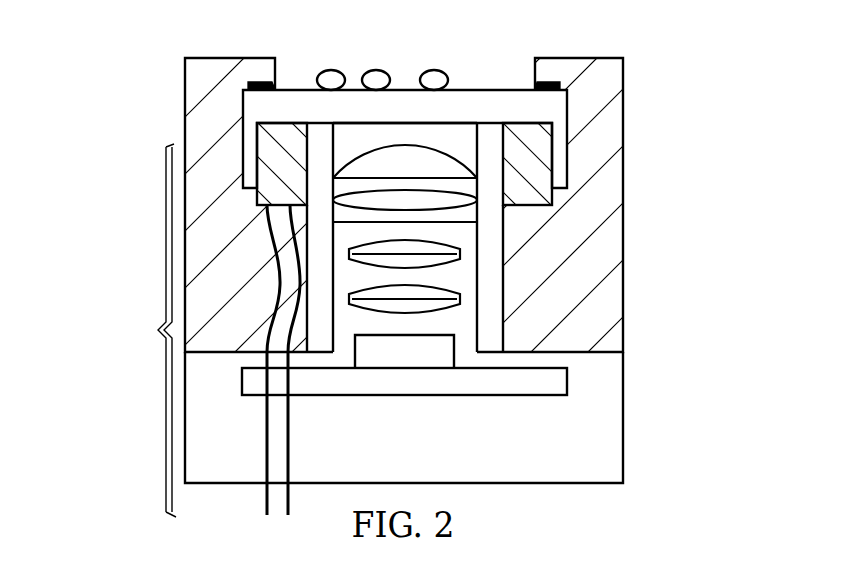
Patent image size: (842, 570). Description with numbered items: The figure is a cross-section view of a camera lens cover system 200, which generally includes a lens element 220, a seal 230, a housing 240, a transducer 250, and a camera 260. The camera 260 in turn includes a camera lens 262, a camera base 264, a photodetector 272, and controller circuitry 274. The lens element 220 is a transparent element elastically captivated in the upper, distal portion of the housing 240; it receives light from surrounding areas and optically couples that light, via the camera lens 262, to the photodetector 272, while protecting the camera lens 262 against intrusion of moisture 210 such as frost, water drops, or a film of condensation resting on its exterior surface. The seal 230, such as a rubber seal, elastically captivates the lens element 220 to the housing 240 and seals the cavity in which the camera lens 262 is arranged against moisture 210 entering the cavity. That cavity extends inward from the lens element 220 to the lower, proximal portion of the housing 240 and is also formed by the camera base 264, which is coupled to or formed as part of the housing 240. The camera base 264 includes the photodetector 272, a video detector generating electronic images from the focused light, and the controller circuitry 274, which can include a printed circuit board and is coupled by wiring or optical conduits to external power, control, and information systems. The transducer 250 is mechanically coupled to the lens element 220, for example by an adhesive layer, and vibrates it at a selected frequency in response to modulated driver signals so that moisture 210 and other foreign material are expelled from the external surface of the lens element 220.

The camera lens cover system 200 is at (133, 109).
The moisture 210 is at (377, 68).
The lens element 220 is at (483, 100).
The seal 230 is at (547, 86).
The housing 240 is at (613, 183).
The transducer 250 is at (530, 197).
The camera 260 is at (144, 330).
The camera lens 262 is at (477, 293).
The camera base 264 is at (613, 430).
The photodetector 272 is at (393, 360).
The controller circuitry 274 is at (432, 398).